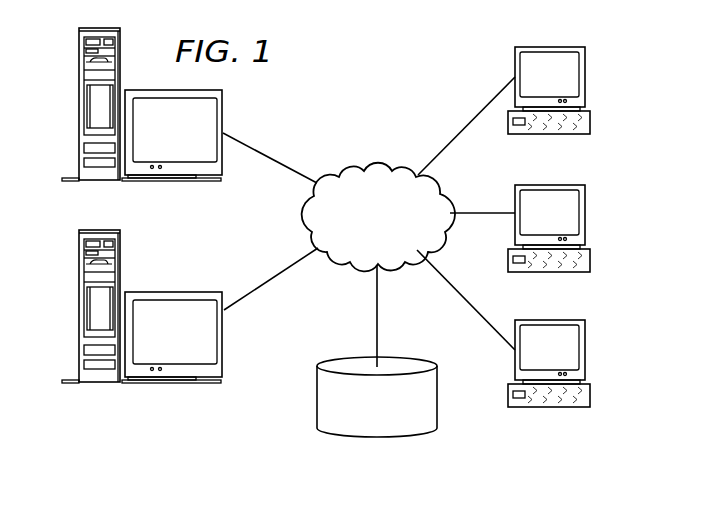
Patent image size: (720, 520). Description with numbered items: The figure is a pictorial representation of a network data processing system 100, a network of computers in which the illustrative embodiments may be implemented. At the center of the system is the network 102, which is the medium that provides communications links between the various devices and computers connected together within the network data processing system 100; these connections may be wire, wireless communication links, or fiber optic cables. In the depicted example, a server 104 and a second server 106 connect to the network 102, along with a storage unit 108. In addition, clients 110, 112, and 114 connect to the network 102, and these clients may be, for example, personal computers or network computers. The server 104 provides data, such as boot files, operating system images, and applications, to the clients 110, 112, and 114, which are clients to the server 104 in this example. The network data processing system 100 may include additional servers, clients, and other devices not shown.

The network data processing system 100 is at (428, 55).
The network 102 is at (350, 167).
The server 104 is at (78, 107).
The server 106 is at (80, 308).
The storage unit 108 is at (360, 438).
The client 110 is at (585, 77).
The client 112 is at (585, 215).
The client 114 is at (585, 350).